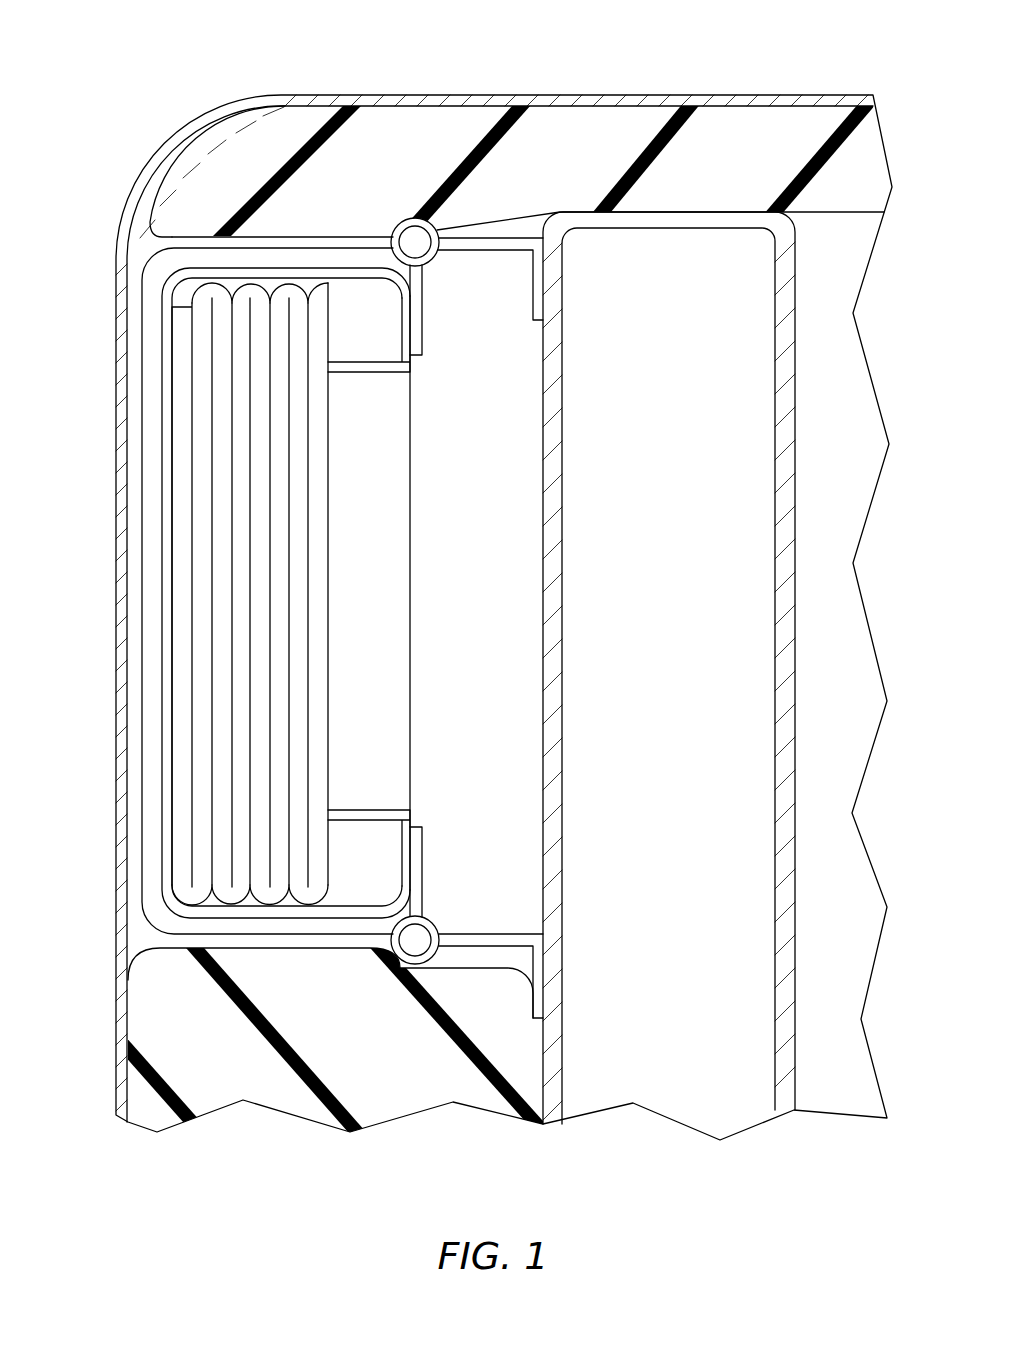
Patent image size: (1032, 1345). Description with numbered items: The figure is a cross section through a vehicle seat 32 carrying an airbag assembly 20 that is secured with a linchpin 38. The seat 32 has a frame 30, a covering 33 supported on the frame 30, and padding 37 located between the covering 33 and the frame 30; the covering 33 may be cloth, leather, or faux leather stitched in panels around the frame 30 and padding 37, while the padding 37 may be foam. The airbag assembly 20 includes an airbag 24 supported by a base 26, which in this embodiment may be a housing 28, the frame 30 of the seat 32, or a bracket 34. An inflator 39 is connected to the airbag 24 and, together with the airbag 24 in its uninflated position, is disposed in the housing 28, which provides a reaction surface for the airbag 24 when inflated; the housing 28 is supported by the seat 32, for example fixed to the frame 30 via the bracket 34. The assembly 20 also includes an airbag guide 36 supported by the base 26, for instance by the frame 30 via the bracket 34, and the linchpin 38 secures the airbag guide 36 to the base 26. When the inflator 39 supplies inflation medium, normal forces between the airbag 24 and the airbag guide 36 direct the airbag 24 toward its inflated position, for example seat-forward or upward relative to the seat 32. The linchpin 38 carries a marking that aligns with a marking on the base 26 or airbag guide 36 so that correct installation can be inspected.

The airbag assembly 20 is at (457, 592).
The airbag 24 is at (203, 458).
The base 26 is at (480, 358).
The housing 28 is at (411, 364).
The frame 30 is at (543, 353).
The seat 32 is at (245, 72).
The covering 33 is at (515, 95).
The bracket 34 is at (423, 287).
The airbag guide 36 is at (152, 253).
The padding 37 is at (737, 125).
The linchpin 38 is at (411, 240).
The inflator 39 is at (393, 578).